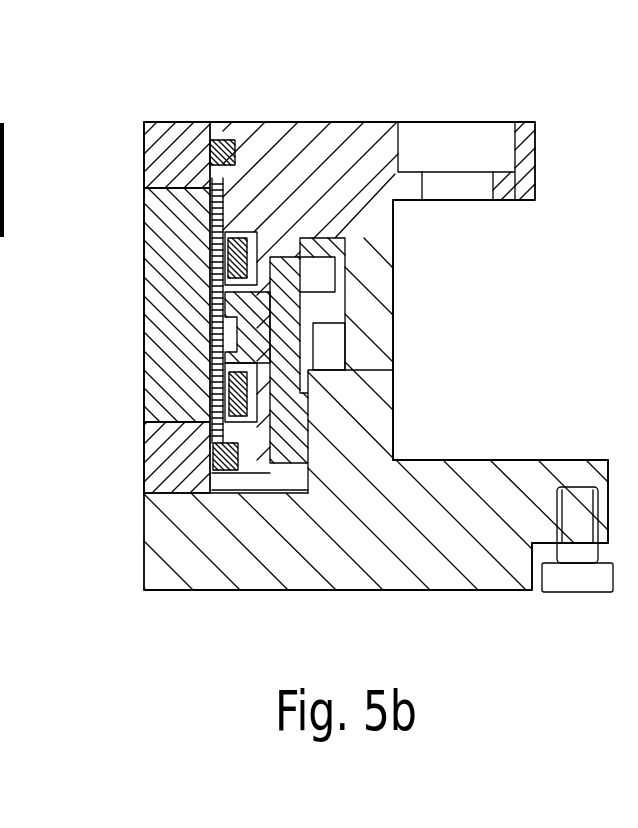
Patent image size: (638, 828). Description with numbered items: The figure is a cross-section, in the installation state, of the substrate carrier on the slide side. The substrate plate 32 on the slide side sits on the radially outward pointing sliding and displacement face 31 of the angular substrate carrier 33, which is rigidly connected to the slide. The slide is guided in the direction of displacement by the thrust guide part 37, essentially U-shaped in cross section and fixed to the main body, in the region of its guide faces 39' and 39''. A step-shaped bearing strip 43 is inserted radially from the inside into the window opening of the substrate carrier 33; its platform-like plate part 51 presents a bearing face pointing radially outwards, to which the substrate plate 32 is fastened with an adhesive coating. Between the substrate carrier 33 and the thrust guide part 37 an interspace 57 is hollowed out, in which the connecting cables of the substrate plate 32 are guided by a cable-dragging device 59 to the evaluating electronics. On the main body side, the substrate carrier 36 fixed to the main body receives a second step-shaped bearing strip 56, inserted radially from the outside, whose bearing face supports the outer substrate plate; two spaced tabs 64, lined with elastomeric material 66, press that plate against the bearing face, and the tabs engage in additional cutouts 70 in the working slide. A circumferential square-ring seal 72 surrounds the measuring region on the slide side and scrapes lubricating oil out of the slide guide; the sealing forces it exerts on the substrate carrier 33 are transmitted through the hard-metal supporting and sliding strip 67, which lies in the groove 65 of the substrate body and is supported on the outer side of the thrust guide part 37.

The sliding and displacement face 31 is at (207, 497).
The substrate plate 32 is at (253, 317).
The substrate carrier 33 is at (352, 160).
The substrate carrier fixed to the main body 36 is at (162, 447).
The thrust guide part 37 is at (500, 510).
The guide face 39' is at (419, 330).
The guide face 39'' is at (500, 408).
The bearing strip 43 is at (283, 307).
The plate part 51 is at (215, 318).
The bearing strip 56 is at (180, 222).
The interspace 57 is at (428, 168).
The cable-dragging device 59 is at (350, 365).
The tabs 64 is at (255, 230).
The groove 65 is at (252, 440).
The elastomeric material 66 is at (208, 262).
The supporting and sliding strip 67 is at (313, 447).
The cutouts 70 is at (263, 238).
The square-ring seal 72 is at (227, 140).